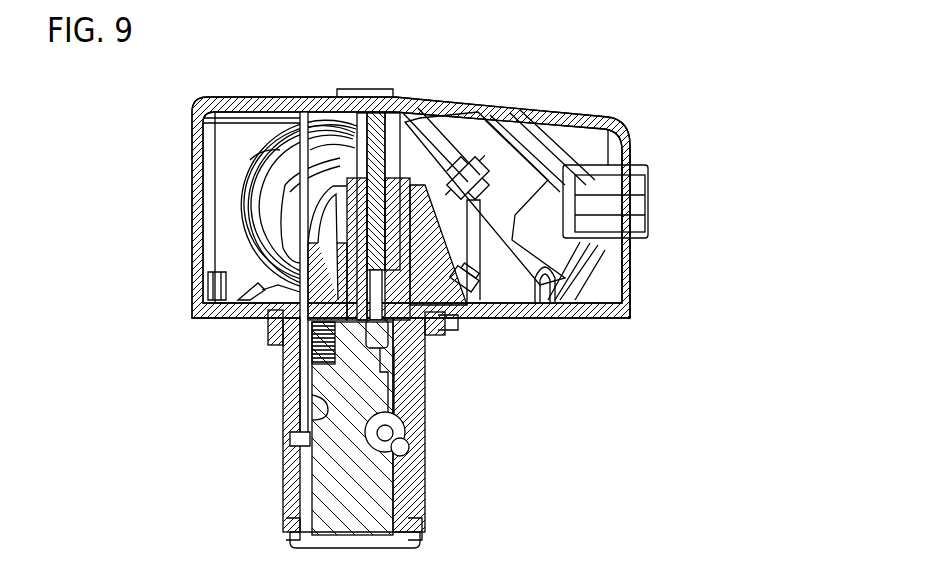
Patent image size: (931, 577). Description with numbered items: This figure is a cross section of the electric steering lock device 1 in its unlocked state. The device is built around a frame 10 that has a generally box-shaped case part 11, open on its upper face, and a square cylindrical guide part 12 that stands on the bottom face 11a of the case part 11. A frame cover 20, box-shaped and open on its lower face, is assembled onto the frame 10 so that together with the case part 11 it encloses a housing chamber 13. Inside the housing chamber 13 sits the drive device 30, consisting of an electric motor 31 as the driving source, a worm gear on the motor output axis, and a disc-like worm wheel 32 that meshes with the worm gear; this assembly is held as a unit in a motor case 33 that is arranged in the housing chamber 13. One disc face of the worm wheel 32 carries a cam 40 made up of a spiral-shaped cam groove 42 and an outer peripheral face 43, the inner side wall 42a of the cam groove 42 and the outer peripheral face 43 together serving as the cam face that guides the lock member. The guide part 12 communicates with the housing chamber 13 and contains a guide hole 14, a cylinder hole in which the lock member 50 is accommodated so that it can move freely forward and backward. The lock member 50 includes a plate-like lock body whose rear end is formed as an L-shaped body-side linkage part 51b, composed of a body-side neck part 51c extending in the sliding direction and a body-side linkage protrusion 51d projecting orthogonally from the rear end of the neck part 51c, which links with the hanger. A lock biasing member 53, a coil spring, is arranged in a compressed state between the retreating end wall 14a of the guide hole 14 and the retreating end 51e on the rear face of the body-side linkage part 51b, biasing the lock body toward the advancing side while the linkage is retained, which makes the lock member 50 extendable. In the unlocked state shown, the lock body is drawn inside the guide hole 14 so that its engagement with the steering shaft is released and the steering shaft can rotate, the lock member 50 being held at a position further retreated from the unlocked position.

The electric steering lock device 1 is at (668, 72).
The frame 10 is at (353, 429).
The case part 11 is at (606, 318).
The bottom face 11a is at (545, 312).
The guide part 12 is at (422, 470).
The housing chamber 13 is at (253, 155).
The guide hole 14 is at (300, 476).
The retreating end wall 14a is at (270, 330).
The frame cover 20 is at (650, 283).
The drive device 30 is at (525, 164).
The electric motor 31 is at (512, 140).
The worm wheel 32 is at (438, 135).
The motor case 33 is at (595, 183).
The cam 40 is at (338, 152).
The cam groove 42 is at (262, 248).
The inner side wall 42a is at (280, 212).
The outer peripheral face 43 is at (300, 176).
The lock member 50 is at (308, 355).
The body-side linkage part 51b is at (507, 358).
The body-side neck part 51c is at (392, 395).
The body-side linkage protrusion 51d is at (388, 350).
The retreating end 51e is at (300, 384).
The lock biasing member 53 is at (254, 351).